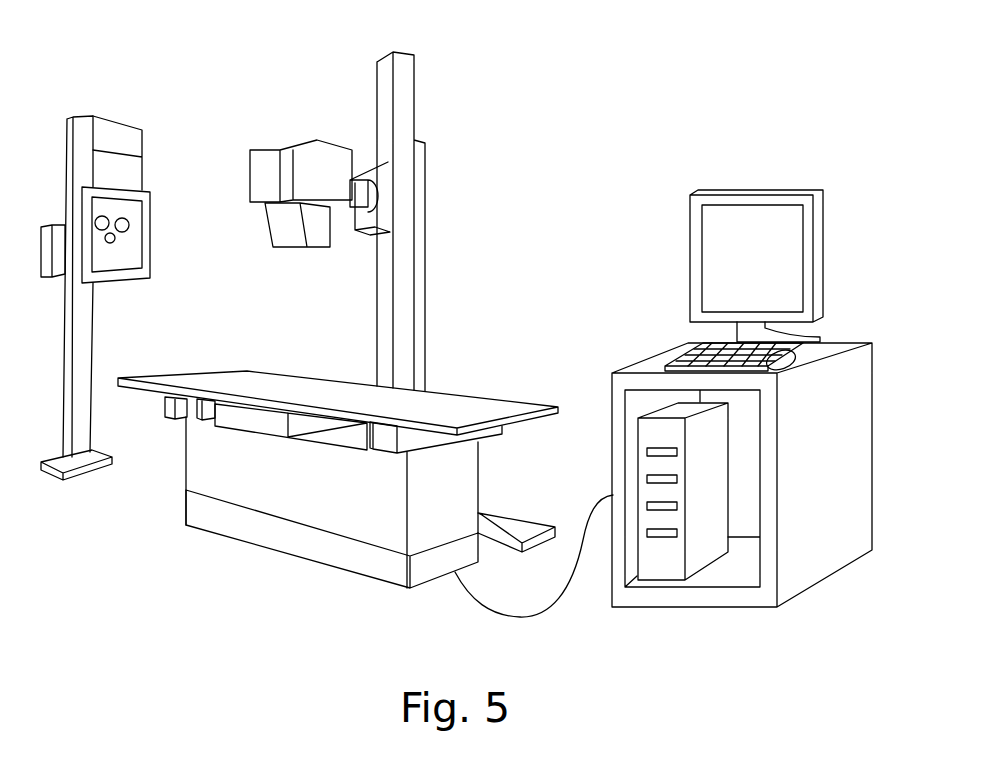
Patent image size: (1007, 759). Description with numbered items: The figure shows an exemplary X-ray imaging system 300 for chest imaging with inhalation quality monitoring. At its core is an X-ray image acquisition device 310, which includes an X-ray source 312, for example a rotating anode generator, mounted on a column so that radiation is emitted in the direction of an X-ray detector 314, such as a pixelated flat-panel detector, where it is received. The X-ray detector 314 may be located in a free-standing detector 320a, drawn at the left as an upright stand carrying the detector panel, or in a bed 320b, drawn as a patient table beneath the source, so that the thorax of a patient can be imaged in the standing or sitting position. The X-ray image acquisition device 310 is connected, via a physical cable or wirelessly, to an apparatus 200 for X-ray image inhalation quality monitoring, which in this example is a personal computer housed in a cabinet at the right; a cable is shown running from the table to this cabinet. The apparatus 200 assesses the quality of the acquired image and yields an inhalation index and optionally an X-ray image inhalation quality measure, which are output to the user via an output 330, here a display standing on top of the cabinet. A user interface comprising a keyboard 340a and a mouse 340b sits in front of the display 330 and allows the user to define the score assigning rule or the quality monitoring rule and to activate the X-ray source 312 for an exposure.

The apparatus 200 is at (702, 548).
The X-ray imaging system 300 is at (435, 220).
The X-ray image acquisition device 310 is at (259, 150).
The X-ray source 312 is at (297, 248).
The X-ray detector 314 is at (113, 240).
The free-standing detector 320a is at (70, 116).
The bed 320b is at (198, 484).
The output 330 is at (750, 217).
The keyboard 340a is at (700, 341).
The mouse 340b is at (800, 353).